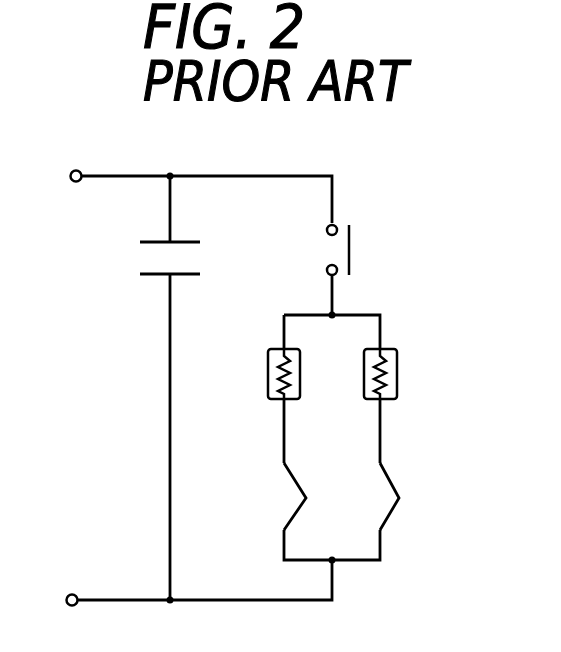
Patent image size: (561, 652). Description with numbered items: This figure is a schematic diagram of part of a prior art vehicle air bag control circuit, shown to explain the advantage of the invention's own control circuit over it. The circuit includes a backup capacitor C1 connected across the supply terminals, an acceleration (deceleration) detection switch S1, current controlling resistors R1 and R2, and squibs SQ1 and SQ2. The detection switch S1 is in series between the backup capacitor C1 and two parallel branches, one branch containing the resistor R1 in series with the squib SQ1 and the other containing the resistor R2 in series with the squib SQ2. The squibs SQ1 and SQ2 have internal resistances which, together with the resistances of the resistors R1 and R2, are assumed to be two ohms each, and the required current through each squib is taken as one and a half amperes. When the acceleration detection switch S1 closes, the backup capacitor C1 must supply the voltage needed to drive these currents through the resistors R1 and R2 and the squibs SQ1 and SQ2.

The backup capacitor C1 is at (198, 243).
The acceleration detection switch S1 is at (350, 246).
The current controlling resistor R1 is at (267, 366).
The current controlling resistor R2 is at (398, 365).
The squib SQ1 is at (290, 517).
The squib SQ2 is at (400, 498).